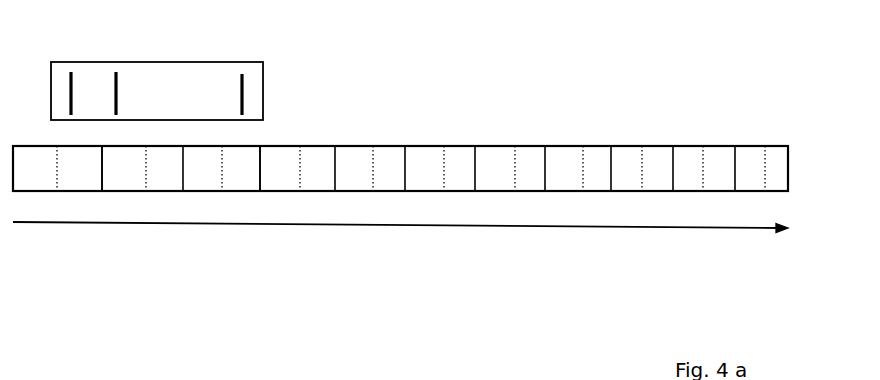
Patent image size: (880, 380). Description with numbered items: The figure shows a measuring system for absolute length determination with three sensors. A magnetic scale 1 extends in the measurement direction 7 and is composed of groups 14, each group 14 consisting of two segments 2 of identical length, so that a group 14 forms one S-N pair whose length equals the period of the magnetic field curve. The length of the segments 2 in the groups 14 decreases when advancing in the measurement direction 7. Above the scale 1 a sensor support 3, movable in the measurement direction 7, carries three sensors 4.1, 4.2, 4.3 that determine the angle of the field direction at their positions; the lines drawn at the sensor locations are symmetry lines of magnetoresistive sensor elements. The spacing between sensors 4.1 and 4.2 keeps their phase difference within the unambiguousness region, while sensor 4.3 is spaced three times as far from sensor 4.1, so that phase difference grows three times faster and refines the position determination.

The magnetic scale 1 is at (517, 150).
The segment 2 is at (240, 180).
The sensor support 3 is at (178, 92).
The first sensor 4.1 is at (71, 72).
The second sensor 4.2 is at (116, 72).
The third sensor 4.3 is at (244, 82).
The measurement direction 7 is at (494, 227).
The group 14 is at (411, 138).